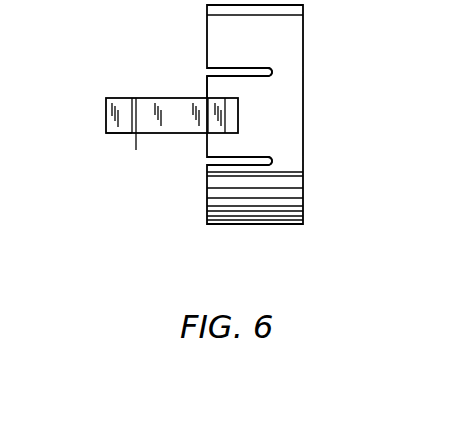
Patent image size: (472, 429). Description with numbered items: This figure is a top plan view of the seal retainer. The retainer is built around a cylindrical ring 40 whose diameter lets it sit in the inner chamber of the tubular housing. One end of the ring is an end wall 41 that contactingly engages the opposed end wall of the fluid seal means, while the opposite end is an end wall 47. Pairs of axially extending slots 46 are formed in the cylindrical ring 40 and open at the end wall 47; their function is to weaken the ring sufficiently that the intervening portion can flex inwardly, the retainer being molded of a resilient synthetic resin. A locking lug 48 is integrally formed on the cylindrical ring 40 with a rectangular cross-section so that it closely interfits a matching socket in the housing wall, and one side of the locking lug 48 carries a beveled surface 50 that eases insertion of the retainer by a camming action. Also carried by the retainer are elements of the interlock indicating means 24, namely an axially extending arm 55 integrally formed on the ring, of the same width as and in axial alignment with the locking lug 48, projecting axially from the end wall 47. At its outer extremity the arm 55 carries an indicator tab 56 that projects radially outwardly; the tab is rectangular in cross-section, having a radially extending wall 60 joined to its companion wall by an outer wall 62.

The cylindrical ring 40 is at (290, 36).
The end wall 41 is at (298, 186).
The axially extending slots 46 is at (209, 70).
The end wall 47 is at (207, 203).
The locking lug 48 is at (220, 98).
The beveled surface 50 is at (236, 114).
The axially extending arm 55 is at (165, 99).
The indicator tab 56 is at (117, 134).
The radially extending wall 60 is at (137, 99).
The outer wall 62 is at (112, 104).
The interlock indicating means 24 is at (134, 149).